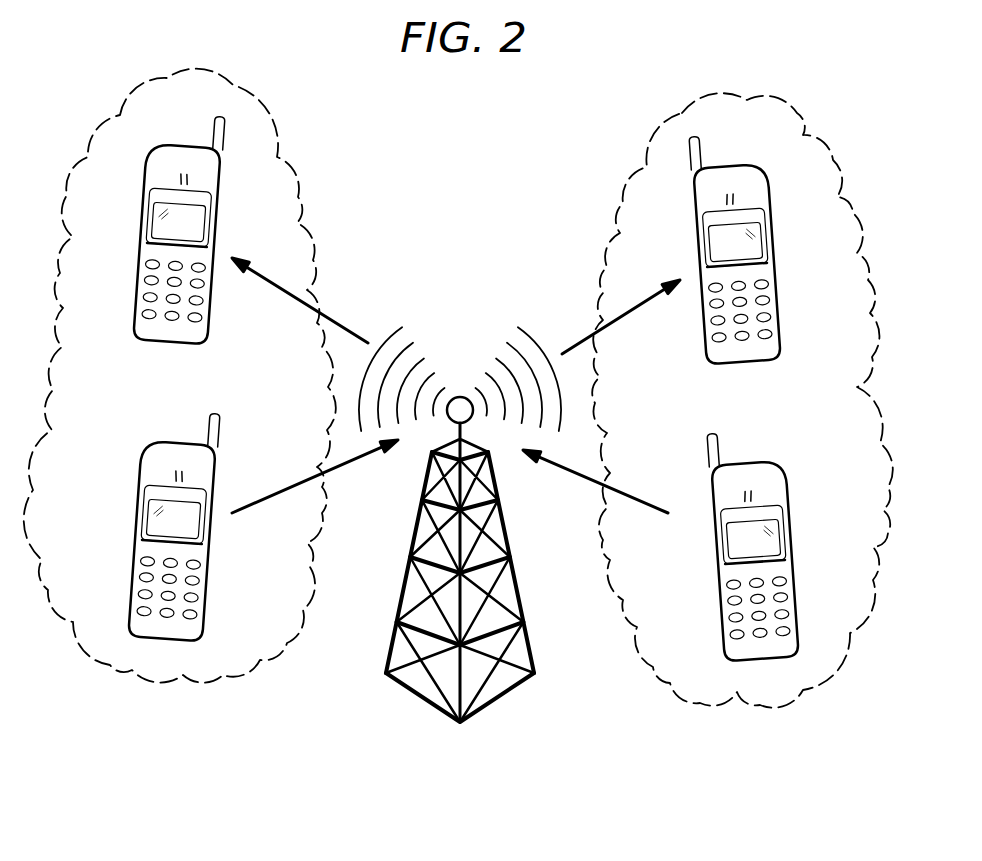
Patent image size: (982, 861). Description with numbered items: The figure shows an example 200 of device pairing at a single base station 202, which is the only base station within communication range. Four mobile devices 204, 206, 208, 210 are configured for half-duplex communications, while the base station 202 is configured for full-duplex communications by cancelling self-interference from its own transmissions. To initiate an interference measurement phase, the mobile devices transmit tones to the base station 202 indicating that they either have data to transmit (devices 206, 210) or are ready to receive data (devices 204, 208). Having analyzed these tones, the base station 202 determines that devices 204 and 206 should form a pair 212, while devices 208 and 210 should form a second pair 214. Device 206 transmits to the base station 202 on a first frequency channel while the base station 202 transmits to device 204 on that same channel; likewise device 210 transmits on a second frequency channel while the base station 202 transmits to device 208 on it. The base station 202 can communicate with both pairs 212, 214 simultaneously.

The example of device pairing 200 is at (460, 201).
The base station 202 is at (458, 368).
The mobile device 204 is at (153, 340).
The mobile device 206 is at (138, 478).
The mobile device 208 is at (777, 248).
The mobile device 210 is at (783, 500).
The pair 212 is at (160, 680).
The second pair 214 is at (766, 705).